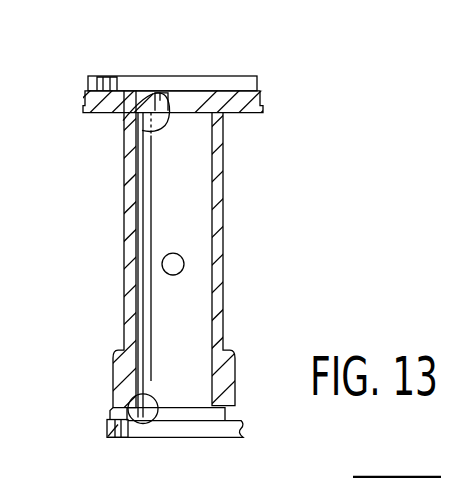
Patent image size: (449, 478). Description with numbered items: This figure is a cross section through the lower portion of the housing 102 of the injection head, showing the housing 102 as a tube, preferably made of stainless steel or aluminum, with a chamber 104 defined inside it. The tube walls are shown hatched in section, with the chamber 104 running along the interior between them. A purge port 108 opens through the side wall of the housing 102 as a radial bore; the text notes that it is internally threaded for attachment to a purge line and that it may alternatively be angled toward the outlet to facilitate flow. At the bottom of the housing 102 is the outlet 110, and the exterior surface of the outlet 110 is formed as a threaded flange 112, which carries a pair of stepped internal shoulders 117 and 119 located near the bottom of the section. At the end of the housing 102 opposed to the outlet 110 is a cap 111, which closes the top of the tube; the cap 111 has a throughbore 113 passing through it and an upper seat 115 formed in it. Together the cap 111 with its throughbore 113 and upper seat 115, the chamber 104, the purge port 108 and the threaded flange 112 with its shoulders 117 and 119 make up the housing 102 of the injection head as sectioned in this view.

The housing 102 is at (252, 160).
The chamber 104 is at (136, 232).
The purge port 108 is at (184, 265).
The outlet 110 is at (202, 450).
The cap 111 is at (262, 90).
The threaded flange 112 is at (243, 423).
The throughbore 113 is at (123, 120).
The upper seat 115 is at (116, 76).
The stepped internal shoulder 117 is at (132, 388).
The stepped internal shoulder 119 is at (120, 442).